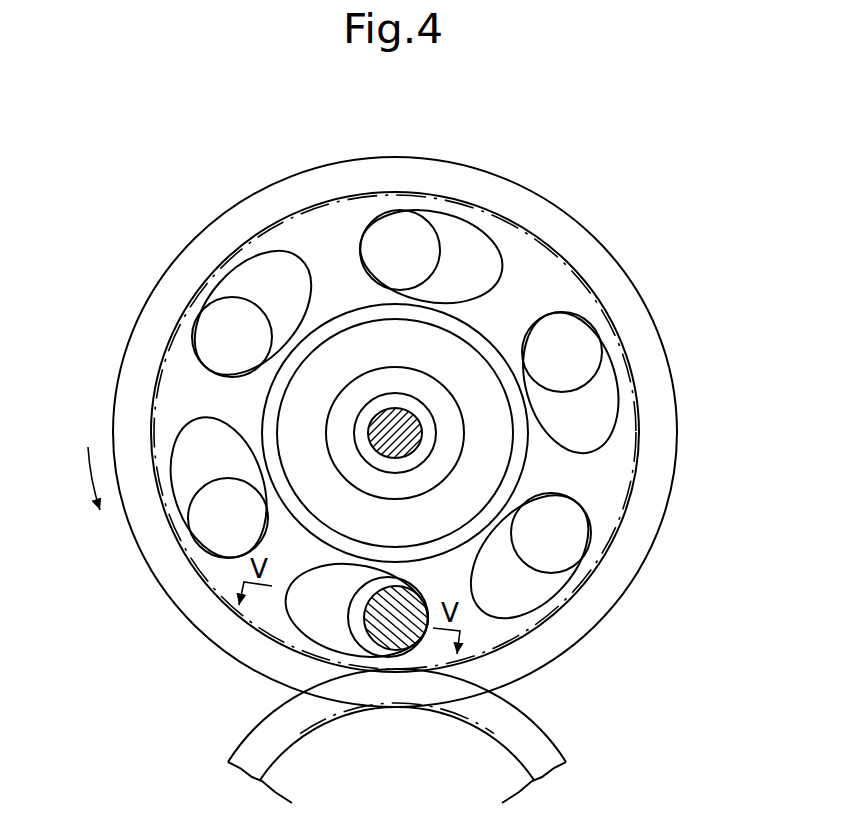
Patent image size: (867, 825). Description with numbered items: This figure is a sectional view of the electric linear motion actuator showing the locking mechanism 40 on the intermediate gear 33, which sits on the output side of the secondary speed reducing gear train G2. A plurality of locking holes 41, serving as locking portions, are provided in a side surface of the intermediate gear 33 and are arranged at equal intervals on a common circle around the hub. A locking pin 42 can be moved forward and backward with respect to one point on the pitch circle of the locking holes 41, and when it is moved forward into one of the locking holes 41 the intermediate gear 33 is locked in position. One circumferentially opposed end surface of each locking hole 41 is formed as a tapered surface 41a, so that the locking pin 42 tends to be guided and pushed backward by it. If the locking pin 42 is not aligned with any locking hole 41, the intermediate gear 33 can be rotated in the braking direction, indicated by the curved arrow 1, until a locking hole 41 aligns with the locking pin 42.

The secondary speed reducing gear train G2 is at (148, 586).
The locking mechanism 40 is at (203, 218).
The intermediate gear 33 is at (170, 278).
The locking hole 41 is at (400, 212).
The tapered surface 41a is at (275, 270).
The locking pin 42 is at (398, 636).
The rotation direction 1 is at (98, 499).